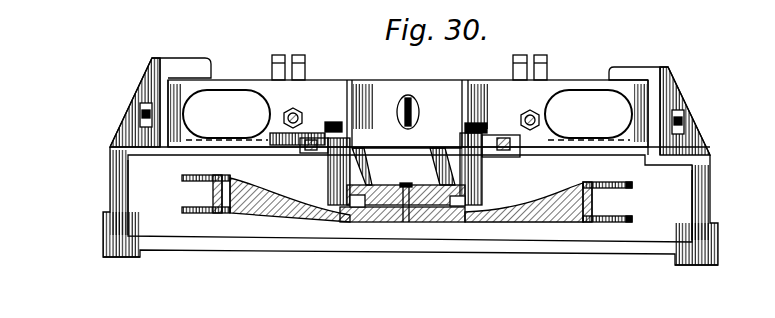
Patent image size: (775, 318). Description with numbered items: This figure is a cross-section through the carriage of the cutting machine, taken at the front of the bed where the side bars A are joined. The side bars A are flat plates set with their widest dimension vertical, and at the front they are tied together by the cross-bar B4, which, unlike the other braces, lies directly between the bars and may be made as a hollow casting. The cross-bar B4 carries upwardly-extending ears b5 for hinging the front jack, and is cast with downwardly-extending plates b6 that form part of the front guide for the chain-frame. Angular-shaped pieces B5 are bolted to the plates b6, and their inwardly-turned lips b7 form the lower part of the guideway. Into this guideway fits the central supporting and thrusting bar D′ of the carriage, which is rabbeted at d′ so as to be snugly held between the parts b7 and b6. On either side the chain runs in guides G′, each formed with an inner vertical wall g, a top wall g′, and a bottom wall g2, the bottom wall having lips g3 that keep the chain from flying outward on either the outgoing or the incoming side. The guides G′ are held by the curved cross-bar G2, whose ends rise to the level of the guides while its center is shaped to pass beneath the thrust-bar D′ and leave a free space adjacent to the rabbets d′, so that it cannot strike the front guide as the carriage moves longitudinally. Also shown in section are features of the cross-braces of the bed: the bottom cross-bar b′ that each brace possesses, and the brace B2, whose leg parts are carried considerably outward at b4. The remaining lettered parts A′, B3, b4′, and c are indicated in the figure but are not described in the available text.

The bottom cross-bar b′ is at (327, 247).
The upper bracket block A′ is at (410, 100).
The side bars A is at (167, 85).
The cross-brace B2 is at (697, 113).
The cross-bar B4 is at (408, 103).
The ears b5 is at (281, 56).
The left bracket bar B3 is at (330, 175).
The angular-shaped pieces B5 is at (470, 184).
The central supporting and thrusting bar D′ is at (407, 166).
The downwardly-extending plates or bars b6 is at (372, 153).
The rabbet d′ is at (452, 222).
The inwardly-turned lips or flanges b7 is at (499, 202).
The guides G′ is at (407, 198).
The curved cross-bar G2 is at (406, 200).
The inner vertical wall g is at (208, 203).
The top wall g′ is at (608, 182).
The lips or flanges g3 is at (633, 185).
The bottom wall g2 is at (609, 219).
The outwardly-carried leg parts b4 is at (697, 198).
The left inner wall b4′ is at (113, 190).
The feet c is at (406, 248).